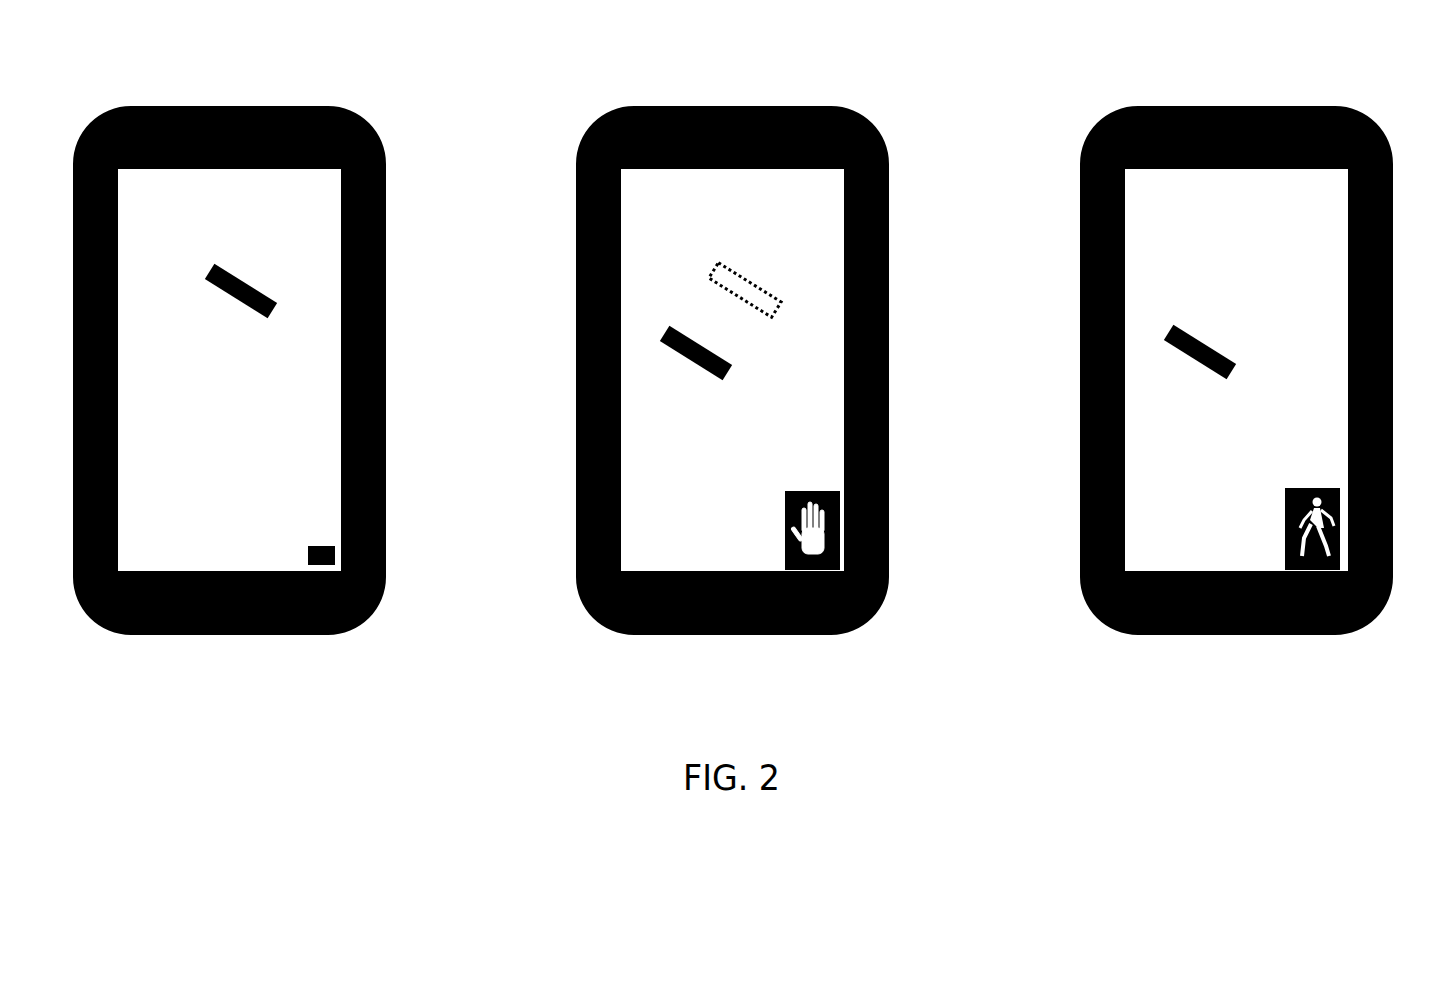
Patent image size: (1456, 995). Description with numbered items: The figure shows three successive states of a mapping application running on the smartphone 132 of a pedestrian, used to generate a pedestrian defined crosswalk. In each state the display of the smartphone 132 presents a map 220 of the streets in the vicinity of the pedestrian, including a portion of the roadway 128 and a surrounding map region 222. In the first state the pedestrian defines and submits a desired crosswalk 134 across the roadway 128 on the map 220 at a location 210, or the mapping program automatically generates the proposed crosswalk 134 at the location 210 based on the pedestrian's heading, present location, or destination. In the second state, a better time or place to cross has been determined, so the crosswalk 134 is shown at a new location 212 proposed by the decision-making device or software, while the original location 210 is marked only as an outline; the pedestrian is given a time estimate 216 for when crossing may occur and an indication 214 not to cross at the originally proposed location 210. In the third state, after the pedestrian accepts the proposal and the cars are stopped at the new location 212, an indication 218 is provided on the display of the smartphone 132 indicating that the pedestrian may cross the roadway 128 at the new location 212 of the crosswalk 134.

The roadway 128 is at (150, 427).
The smartphone 132 is at (291, 98).
The crosswalk 134 is at (258, 298).
The location 210 is at (200, 264).
The new location 212 is at (664, 314).
The indication 214 is at (828, 483).
The time estimate 216 is at (623, 550).
The indication 218 is at (1328, 482).
The map 220 is at (145, 192).
The map region 222 is at (282, 442).